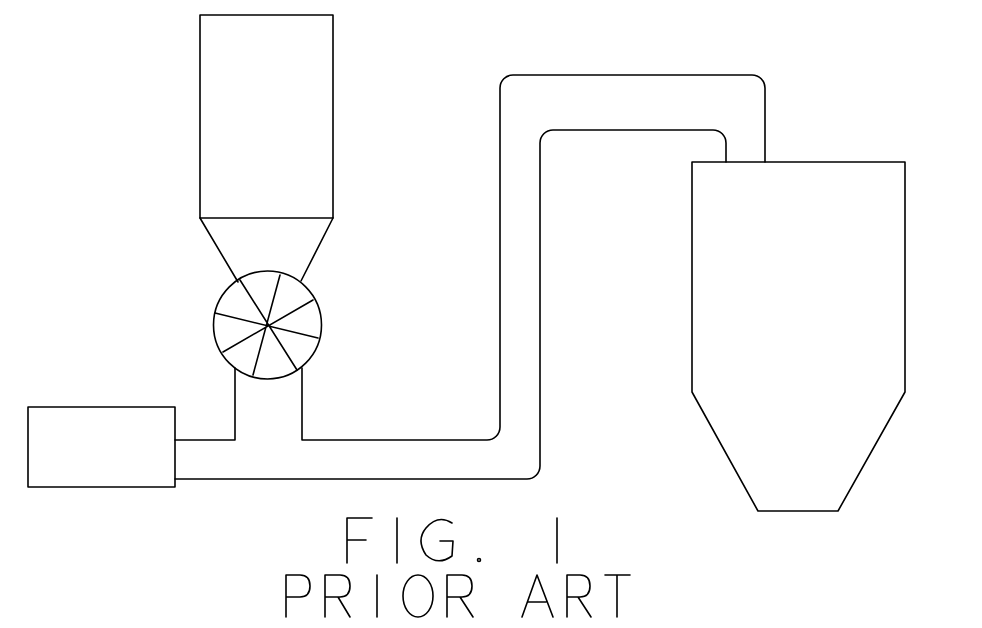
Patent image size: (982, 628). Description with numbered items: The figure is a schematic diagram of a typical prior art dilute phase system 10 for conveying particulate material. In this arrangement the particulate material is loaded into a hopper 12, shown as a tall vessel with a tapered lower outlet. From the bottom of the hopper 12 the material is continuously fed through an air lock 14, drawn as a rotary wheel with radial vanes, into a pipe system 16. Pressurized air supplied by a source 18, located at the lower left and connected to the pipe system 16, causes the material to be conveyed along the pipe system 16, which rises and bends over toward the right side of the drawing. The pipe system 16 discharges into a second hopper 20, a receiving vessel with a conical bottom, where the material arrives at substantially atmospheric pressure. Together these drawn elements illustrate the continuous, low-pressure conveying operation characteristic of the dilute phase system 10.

The dilute phase system 10 is at (583, 257).
The hopper 12 is at (200, 118).
The air lock 14 is at (214, 325).
The pipe system 16 is at (472, 439).
The source 18 is at (101, 447).
The hopper 20 is at (798, 336).